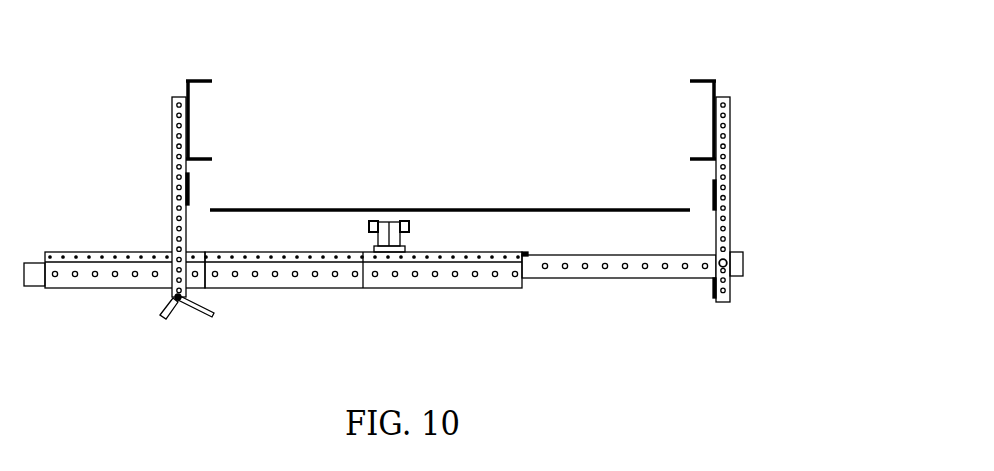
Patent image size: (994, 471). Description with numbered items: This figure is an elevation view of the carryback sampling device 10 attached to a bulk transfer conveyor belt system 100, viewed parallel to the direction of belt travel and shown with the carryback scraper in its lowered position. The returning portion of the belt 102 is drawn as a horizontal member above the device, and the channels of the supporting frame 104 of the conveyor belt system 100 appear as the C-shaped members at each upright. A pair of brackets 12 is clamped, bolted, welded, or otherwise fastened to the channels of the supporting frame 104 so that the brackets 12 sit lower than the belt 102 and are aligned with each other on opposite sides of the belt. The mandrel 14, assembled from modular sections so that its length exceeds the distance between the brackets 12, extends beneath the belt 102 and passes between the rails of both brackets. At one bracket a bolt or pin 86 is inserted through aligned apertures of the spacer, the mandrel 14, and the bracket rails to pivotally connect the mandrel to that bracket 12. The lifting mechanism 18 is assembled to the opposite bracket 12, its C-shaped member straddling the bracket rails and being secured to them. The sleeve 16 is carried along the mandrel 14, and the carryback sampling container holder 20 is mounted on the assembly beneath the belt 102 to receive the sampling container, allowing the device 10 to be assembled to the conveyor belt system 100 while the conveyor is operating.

The carryback sampling device 10 is at (493, 275).
The brackets 12 is at (182, 157).
The mandrel 14 is at (630, 270).
The sleeve 16 is at (290, 283).
The lifting mechanism 18 is at (162, 312).
The carryback sampling container holder 20 is at (393, 233).
The bolt or pin 86 is at (728, 275).
The conveyor belt system 100 is at (200, 80).
The belt 102 is at (460, 210).
The supporting frame 104 is at (200, 157).